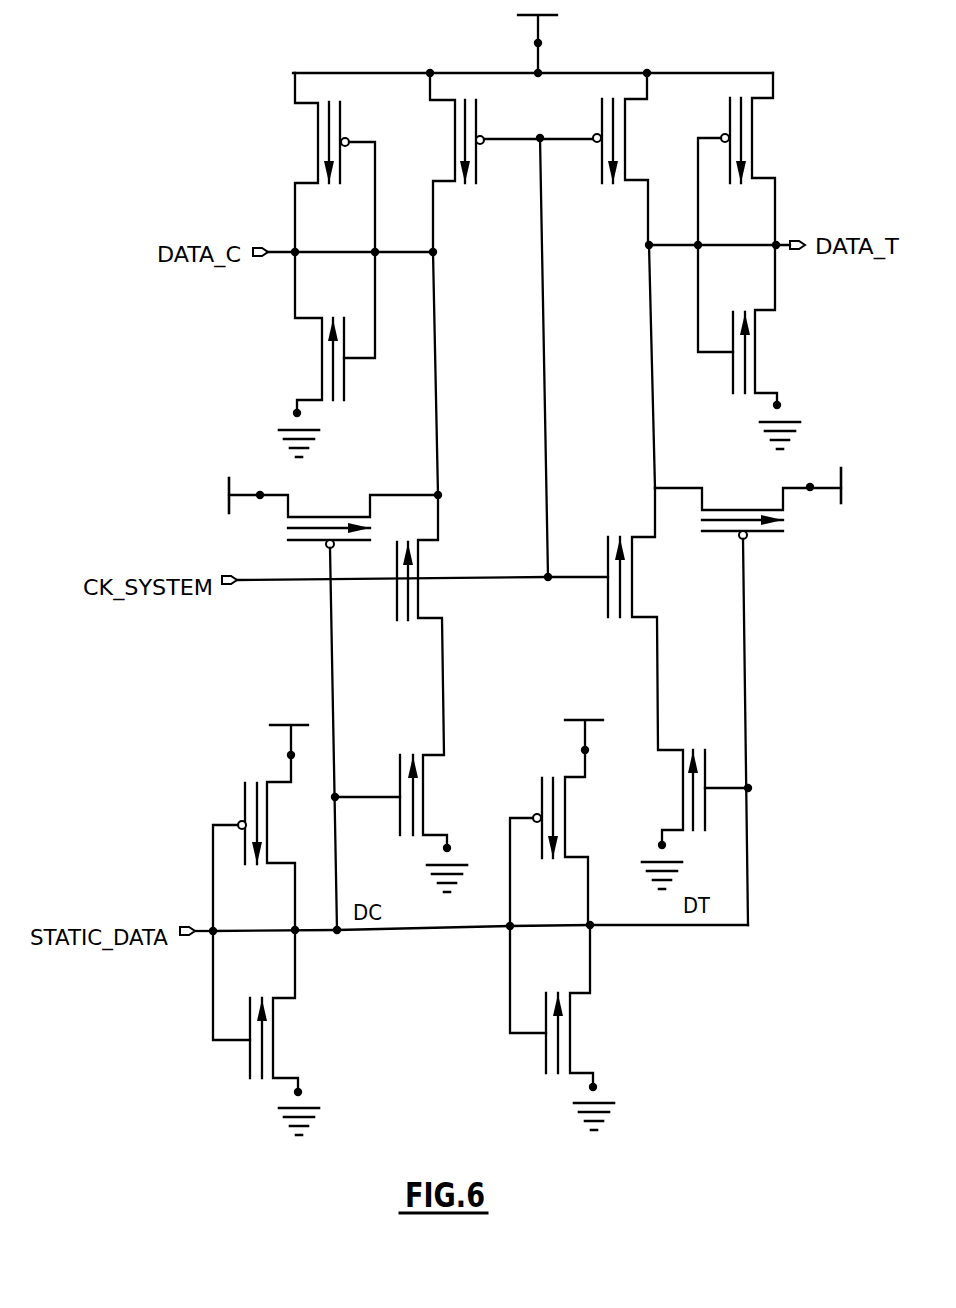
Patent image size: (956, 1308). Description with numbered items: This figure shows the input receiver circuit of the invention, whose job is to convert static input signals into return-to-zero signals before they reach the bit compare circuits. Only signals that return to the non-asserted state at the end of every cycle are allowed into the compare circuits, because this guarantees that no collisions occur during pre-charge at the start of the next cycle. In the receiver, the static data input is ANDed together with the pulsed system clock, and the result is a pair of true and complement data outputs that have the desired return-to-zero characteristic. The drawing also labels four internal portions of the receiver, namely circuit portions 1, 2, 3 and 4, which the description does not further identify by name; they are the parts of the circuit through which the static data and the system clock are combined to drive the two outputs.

The first node 1 is at (447, 373).
The second node 2 is at (636, 366).
The third transistor stack 3 is at (400, 693).
The fourth transistor stack 4 is at (680, 688).